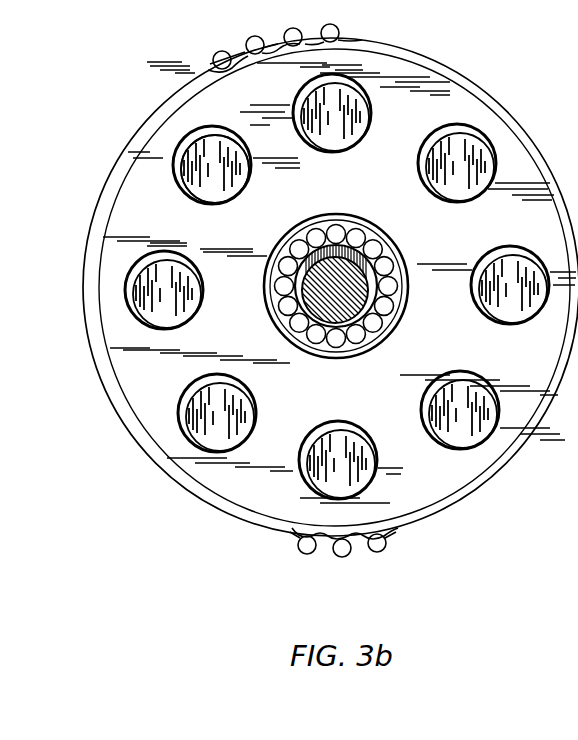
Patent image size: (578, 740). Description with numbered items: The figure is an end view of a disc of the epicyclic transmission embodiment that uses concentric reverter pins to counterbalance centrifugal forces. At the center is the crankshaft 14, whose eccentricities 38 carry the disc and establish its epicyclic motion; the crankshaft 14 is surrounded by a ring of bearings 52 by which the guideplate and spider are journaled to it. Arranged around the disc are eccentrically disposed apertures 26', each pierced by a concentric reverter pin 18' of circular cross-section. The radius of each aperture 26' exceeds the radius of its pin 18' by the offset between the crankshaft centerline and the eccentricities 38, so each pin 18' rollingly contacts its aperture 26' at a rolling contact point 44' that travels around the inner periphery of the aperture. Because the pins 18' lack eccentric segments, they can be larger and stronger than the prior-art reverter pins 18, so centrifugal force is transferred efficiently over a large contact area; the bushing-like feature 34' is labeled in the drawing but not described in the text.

The crankshaft 14 is at (360, 306).
The reverter pins 18 is at (165, 165).
The concentric reverter pins 18' is at (479, 135).
The eccentrically disposed apertures 26' is at (369, 81).
The web 34' is at (256, 106).
The eccentricities 38 is at (372, 262).
The rolling contact point 44' is at (195, 183).
The bearings 52 is at (288, 308).